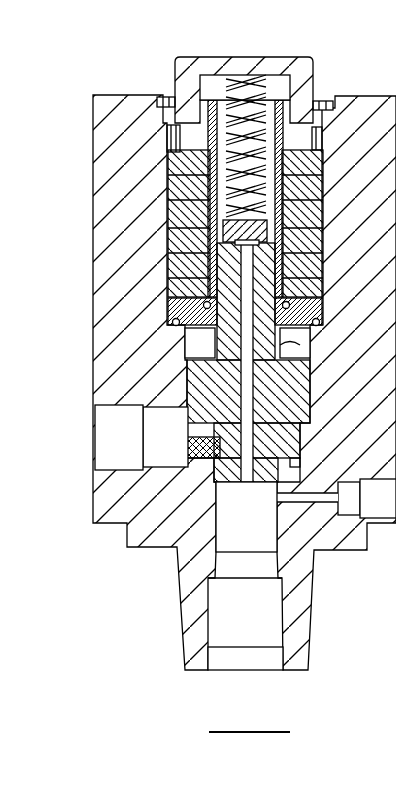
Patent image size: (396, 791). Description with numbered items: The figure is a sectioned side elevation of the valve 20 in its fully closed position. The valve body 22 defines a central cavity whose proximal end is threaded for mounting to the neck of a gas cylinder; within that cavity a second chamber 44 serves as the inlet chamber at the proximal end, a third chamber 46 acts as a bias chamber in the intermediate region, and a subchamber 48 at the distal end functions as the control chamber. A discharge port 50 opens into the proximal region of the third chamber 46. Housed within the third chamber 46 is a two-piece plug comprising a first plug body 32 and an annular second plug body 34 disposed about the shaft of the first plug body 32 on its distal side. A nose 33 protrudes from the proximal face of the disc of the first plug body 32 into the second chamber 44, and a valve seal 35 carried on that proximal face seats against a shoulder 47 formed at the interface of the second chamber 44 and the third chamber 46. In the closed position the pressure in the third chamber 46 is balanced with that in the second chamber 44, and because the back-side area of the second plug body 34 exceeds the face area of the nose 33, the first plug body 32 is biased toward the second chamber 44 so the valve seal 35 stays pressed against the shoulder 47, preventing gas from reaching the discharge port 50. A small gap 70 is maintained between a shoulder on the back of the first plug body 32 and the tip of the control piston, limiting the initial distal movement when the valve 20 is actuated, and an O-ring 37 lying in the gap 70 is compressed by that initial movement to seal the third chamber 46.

The valve 20 is at (92, 66).
The valve body 22 is at (93, 148).
The first plug body 32 is at (303, 414).
The nose 33 is at (236, 483).
The second plug body 34 is at (189, 438).
The valve seal 35 is at (205, 462).
The O-ring 37 is at (170, 302).
The second chamber 44 is at (263, 551).
The third chamber 46 is at (294, 352).
The shoulder 47 is at (300, 462).
The subchamber 48 is at (300, 82).
The discharge port 50 is at (135, 455).
The gap 70 is at (186, 352).